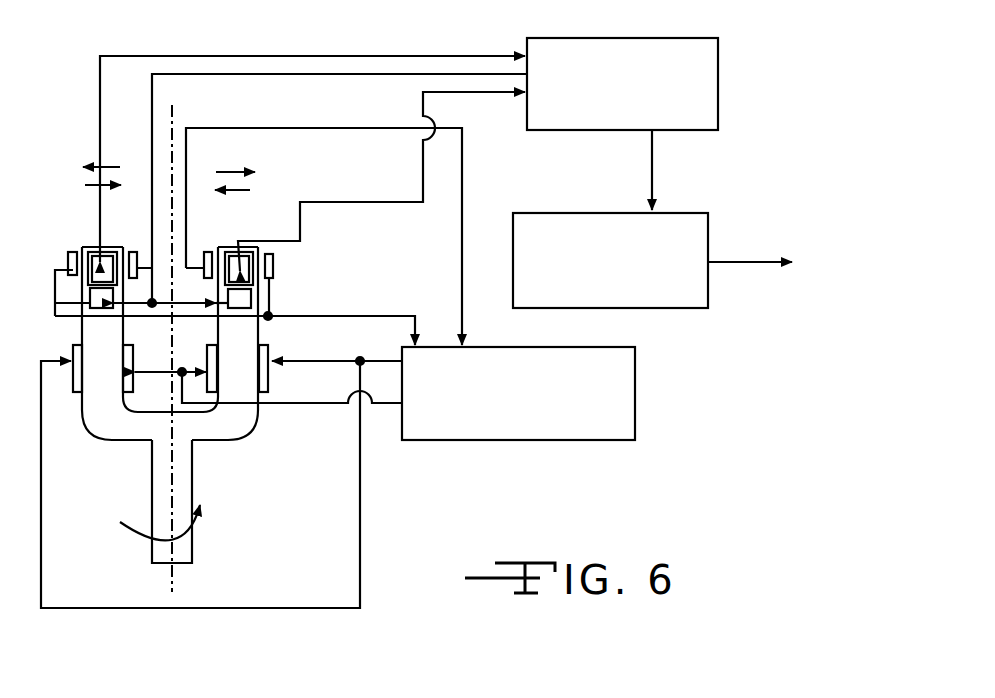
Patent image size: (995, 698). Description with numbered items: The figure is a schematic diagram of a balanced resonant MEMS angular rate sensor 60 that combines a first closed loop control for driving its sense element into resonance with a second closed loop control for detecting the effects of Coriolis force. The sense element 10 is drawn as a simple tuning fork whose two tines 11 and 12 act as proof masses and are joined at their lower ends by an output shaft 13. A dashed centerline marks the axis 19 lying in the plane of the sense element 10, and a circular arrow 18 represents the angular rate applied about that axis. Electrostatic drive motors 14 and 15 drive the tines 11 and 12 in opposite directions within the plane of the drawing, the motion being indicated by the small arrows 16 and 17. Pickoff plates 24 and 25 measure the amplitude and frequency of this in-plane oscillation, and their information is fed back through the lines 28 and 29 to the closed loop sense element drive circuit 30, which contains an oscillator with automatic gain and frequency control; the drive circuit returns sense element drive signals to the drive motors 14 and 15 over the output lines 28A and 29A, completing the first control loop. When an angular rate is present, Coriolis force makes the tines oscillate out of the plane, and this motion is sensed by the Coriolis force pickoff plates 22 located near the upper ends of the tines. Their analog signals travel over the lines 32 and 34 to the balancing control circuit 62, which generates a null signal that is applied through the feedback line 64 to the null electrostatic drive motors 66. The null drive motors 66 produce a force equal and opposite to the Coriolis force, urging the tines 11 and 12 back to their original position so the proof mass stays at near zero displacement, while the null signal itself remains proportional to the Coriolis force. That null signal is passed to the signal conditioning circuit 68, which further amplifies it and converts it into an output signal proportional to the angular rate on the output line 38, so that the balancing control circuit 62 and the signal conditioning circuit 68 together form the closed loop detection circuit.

The sense element 10 is at (204, 296).
The tine 11 is at (259, 365).
The tine 12 is at (118, 359).
The output shaft 13 is at (183, 481).
The electrostatic drive motor 14 is at (73, 352).
The electrostatic drive motor 15 is at (148, 344).
The vibration direction arrow 16 is at (105, 167).
The vibration direction arrow 17 is at (95, 185).
The angular rate arrow 18 is at (212, 522).
The axis 19 is at (172, 112).
The Coriolis force pickoff plate 22 is at (97, 256).
The pickoff plate 24 is at (68, 262).
The pickoff plate 25 is at (133, 251).
The feedback line 28 is at (300, 127).
The output line 28A is at (332, 347).
The feedback line 29 is at (386, 316).
The output line 29A is at (293, 405).
The sense element drive circuit 30 is at (475, 347).
The line 32 is at (425, 56).
The line 34 is at (485, 94).
The output line 38 is at (728, 262).
The balanced resonant MEMS angular rate sensor 60 is at (256, 42).
The balancing control circuit 62 is at (721, 87).
The feedback line 64 is at (362, 75).
The null electrostatic drive motor 66 is at (90, 298).
The signal conditioning circuit 68 is at (562, 212).